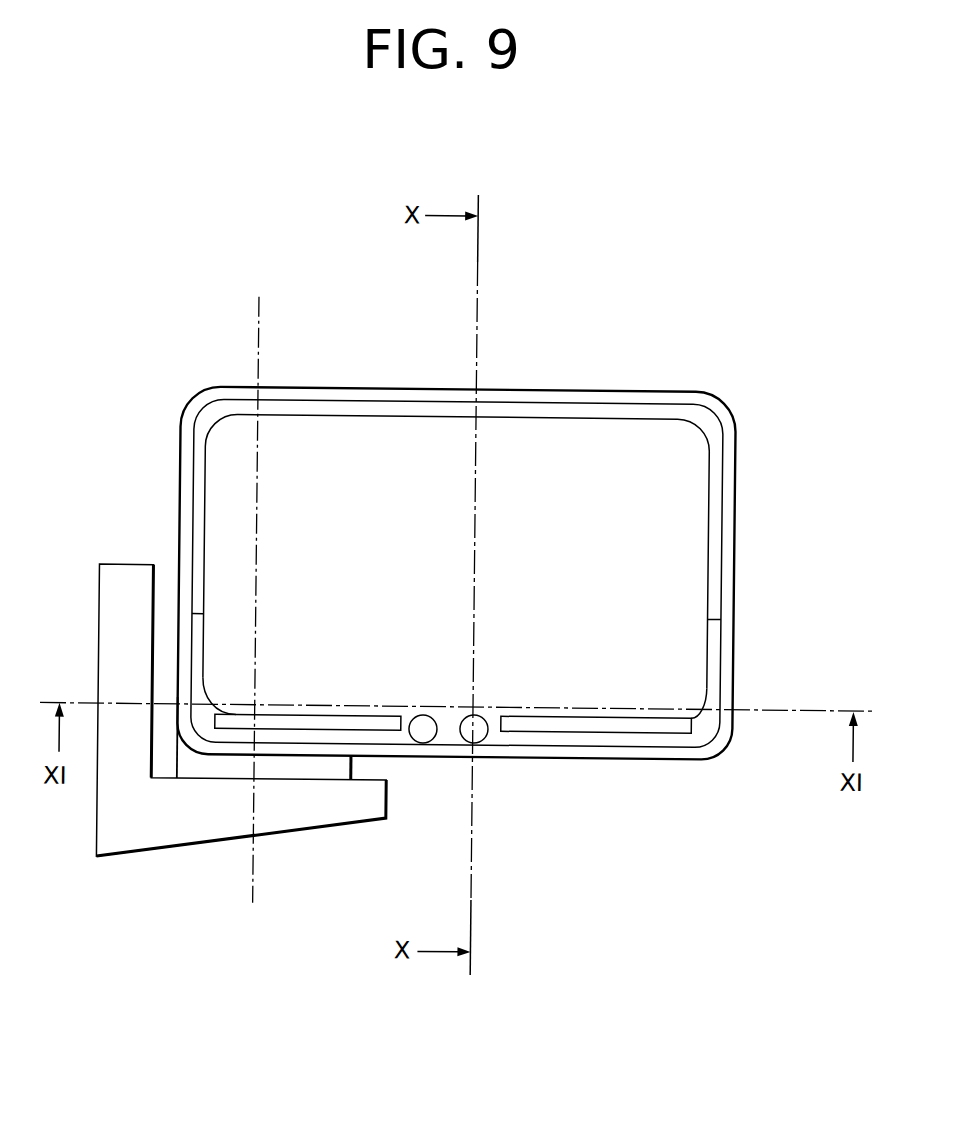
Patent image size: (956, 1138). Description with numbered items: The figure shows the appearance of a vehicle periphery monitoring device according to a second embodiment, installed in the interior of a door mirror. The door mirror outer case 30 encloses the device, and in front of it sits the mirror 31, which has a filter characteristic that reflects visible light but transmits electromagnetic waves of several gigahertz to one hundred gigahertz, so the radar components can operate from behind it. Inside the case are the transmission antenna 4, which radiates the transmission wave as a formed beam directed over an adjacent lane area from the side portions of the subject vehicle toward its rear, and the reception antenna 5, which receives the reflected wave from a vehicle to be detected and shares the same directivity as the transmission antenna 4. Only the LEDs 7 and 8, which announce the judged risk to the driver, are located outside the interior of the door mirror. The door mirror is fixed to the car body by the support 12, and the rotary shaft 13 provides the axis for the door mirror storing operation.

The transmission antenna 4 is at (622, 721).
The reception antenna 5 is at (378, 723).
The LED 7 is at (424, 738).
The LED 8 is at (479, 735).
The support 12 is at (160, 855).
The rotary shaft 13 is at (256, 883).
The door mirror outer case 30 is at (309, 389).
The mirror 31 is at (380, 438).